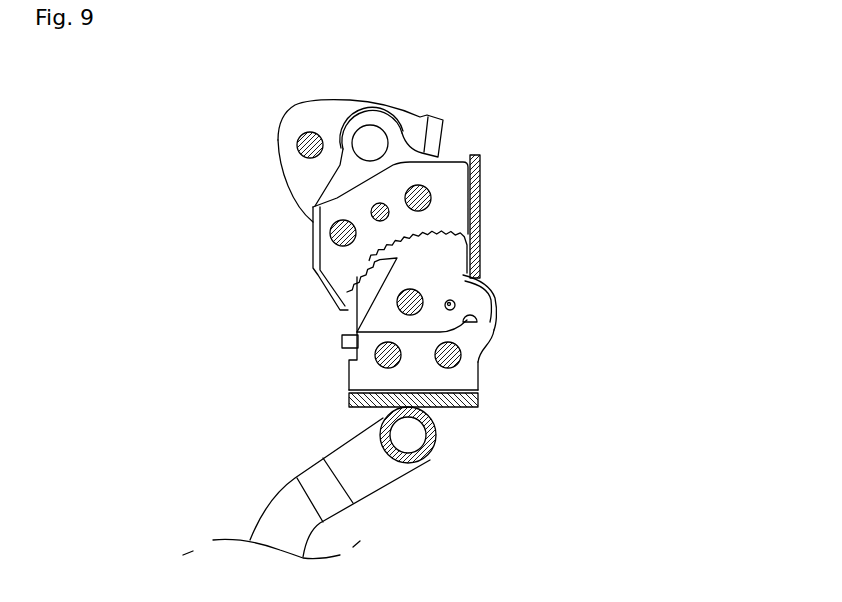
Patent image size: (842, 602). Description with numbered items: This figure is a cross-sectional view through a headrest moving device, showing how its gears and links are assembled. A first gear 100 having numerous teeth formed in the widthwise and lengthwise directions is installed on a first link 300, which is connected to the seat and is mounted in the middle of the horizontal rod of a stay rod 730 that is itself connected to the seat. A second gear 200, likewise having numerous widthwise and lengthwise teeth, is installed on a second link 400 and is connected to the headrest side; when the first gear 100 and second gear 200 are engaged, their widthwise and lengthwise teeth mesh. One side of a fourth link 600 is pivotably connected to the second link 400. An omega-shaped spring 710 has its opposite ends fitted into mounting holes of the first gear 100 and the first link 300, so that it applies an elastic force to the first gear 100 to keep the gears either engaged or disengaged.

The first gear 100 is at (369, 308).
The second gear 200 is at (316, 246).
The first link 300 is at (481, 397).
The second link 400 is at (482, 198).
The fourth link 600 is at (410, 116).
The spring 710 is at (492, 293).
The stay rod 730 is at (337, 453).